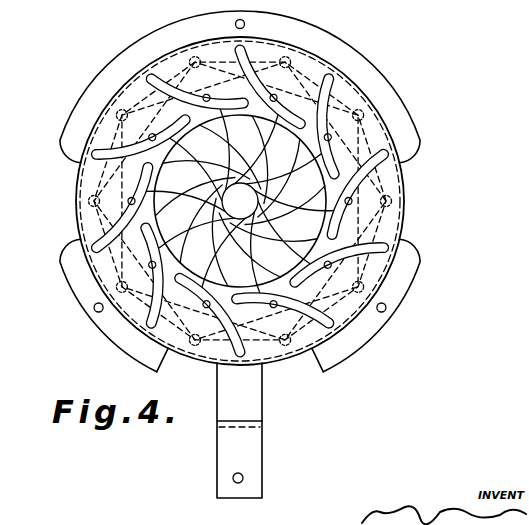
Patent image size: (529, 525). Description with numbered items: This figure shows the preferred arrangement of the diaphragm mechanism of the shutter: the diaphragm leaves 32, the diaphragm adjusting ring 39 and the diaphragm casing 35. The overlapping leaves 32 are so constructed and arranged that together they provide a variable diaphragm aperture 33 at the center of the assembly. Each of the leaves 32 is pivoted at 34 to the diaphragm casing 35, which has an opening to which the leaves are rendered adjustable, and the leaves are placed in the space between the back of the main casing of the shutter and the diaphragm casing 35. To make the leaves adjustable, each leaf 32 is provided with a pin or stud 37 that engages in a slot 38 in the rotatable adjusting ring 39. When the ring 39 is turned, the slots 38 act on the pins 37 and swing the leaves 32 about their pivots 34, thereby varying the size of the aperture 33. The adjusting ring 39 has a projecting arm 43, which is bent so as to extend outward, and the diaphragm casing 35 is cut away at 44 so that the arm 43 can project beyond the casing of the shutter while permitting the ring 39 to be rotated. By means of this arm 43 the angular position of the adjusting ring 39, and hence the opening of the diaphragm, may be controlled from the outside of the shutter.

The diaphragm leaves 32 is at (239, 201).
The variable diaphragm aperture 33 is at (240, 201).
The pivots 34 is at (298, 60).
The diaphragm casing 35 is at (395, 293).
The pins or studs 37 is at (276, 97).
The slots 38 is at (97, 245).
The diaphragm adjusting ring 39 is at (240, 199).
The projecting arm 43 is at (253, 412).
The cut-away portion 44 is at (163, 364).